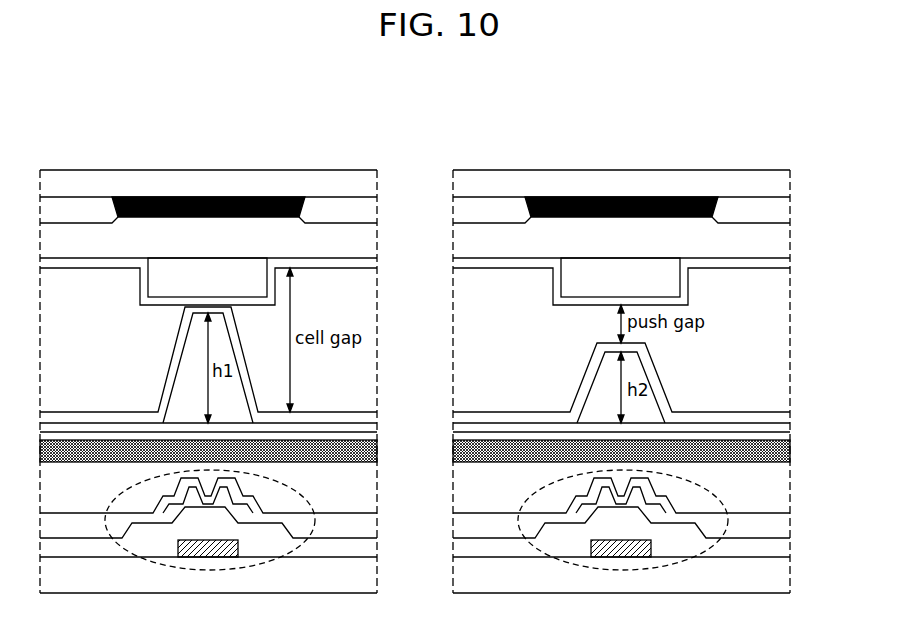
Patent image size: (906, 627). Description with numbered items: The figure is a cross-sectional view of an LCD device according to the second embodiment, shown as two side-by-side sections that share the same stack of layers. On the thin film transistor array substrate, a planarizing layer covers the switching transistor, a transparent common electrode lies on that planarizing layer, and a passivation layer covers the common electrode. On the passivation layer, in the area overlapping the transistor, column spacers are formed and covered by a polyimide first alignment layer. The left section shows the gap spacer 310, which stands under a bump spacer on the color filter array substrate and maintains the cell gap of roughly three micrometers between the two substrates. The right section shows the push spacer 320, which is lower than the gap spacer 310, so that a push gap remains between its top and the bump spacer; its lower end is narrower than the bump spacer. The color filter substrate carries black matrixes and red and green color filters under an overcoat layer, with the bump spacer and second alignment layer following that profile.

The gap spacer 310 is at (195, 384).
The push spacer 320 is at (585, 387).